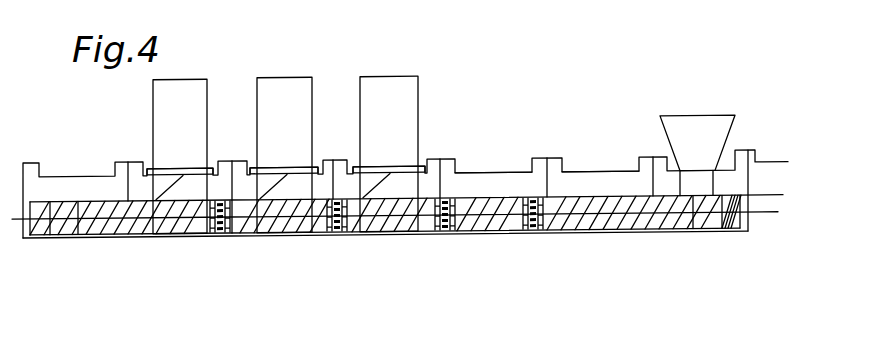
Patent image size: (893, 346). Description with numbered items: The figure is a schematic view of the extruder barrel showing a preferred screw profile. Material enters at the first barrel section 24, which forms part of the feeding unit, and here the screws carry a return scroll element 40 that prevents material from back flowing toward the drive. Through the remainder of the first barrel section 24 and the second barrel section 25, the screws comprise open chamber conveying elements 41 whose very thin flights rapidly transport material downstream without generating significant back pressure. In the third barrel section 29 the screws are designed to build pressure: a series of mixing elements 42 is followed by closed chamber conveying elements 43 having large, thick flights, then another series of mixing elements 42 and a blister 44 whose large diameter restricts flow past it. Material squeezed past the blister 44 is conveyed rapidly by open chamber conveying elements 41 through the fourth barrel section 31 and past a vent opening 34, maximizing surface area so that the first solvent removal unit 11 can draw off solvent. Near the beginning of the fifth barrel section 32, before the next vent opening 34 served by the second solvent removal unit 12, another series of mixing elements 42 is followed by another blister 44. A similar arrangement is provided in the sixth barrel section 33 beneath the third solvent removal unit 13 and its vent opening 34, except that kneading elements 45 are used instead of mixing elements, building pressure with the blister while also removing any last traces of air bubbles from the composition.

The first solvent removal unit 11 is at (427, 131).
The second solvent removal unit 12 is at (322, 130).
The third solvent removal unit 13 is at (212, 130).
The first barrel section 24 is at (737, 167).
The second barrel section 25 is at (587, 185).
The third barrel section 29 is at (510, 185).
The fourth barrel section 31 is at (437, 172).
The fifth barrel section 32 is at (333, 168).
The sixth barrel section 33 is at (229, 168).
The vent opening 34 is at (188, 188).
The return scroll element 40 is at (727, 239).
The open chamber conveying element 41 is at (55, 238).
The mixing element 42 is at (350, 238).
The closed chamber conveying element 43 is at (480, 238).
The blister 44 is at (206, 238).
The kneading element 45 is at (233, 238).